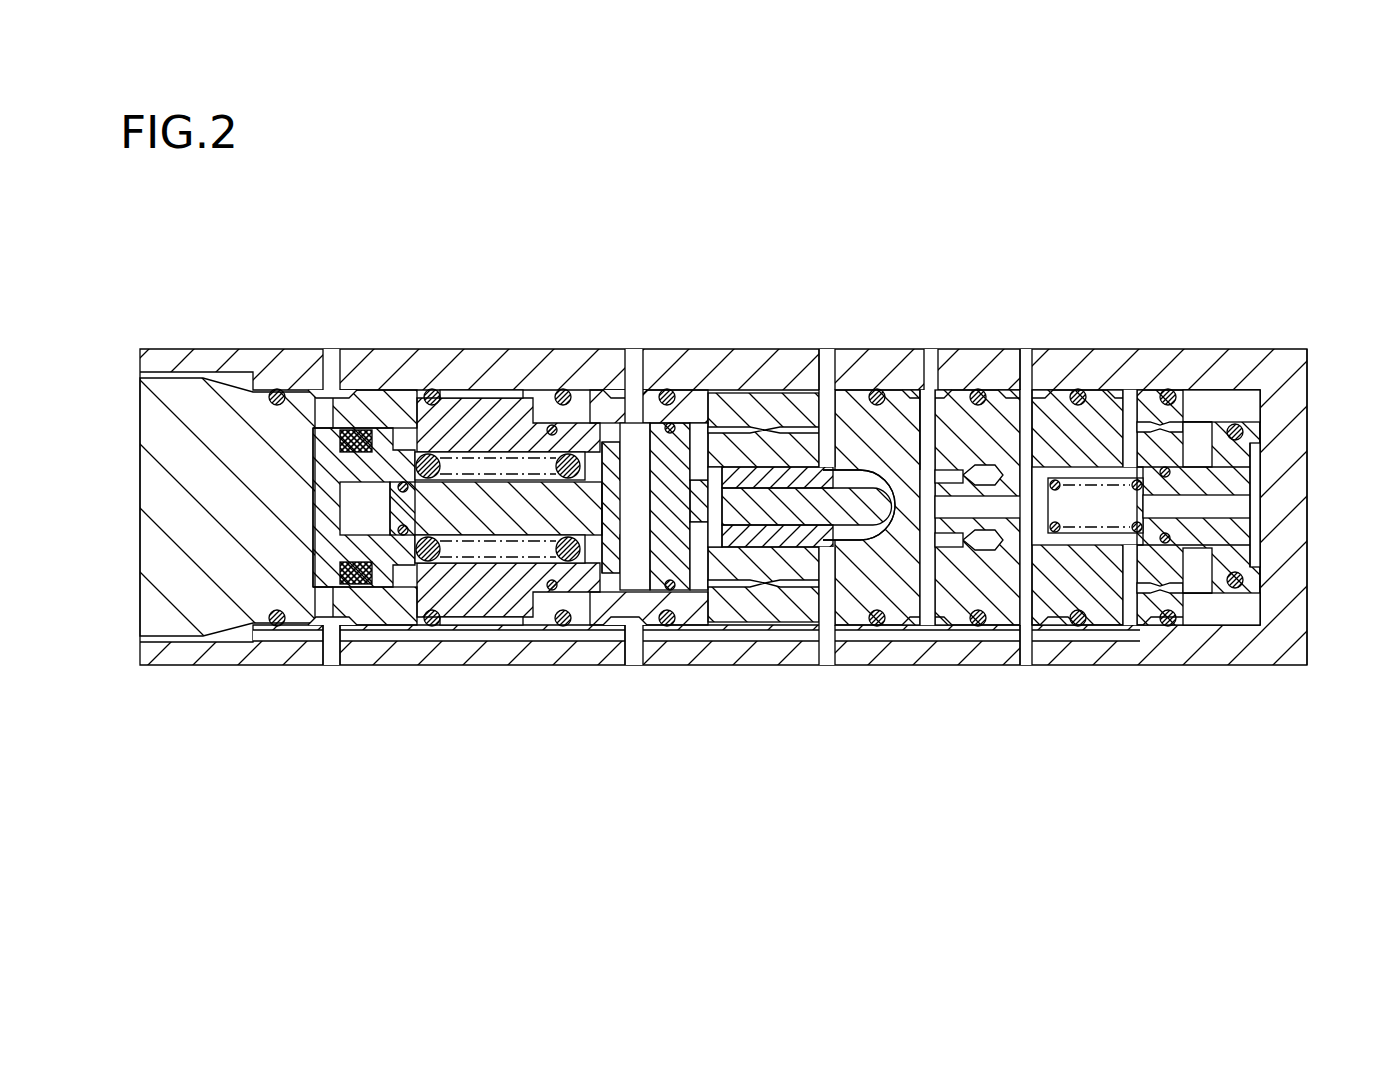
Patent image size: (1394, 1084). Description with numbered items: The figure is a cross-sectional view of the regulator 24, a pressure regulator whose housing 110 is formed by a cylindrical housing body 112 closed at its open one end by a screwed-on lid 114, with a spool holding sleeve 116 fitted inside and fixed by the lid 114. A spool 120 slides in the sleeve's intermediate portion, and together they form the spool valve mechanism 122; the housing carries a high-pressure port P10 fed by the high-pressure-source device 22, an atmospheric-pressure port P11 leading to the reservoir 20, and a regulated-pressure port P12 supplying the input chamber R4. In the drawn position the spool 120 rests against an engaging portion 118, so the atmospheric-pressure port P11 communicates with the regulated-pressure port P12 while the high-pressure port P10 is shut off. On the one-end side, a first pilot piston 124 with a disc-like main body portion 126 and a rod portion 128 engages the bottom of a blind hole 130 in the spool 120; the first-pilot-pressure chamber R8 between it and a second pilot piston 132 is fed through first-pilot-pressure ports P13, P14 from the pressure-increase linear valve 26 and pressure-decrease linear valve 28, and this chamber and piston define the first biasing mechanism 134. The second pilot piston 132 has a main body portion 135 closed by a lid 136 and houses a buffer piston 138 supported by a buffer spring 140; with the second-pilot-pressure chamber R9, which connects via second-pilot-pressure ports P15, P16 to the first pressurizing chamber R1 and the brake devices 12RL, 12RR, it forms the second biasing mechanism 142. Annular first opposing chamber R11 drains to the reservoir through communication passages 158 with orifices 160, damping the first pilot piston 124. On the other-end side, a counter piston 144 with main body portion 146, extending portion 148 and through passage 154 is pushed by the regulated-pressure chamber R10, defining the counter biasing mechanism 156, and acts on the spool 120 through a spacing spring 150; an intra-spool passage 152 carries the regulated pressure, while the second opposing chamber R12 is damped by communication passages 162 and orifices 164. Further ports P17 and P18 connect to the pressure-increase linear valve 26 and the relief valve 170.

The housing 110 is at (470, 726).
The lid 114 is at (150, 410).
The second pilot piston 132 is at (395, 590).
The second biasing mechanism 142 is at (366, 394).
The buffer piston 138 is at (502, 520).
The first biasing mechanism 134 is at (693, 462).
The lid 136 is at (540, 427).
The main body portion 135 is at (421, 436).
The buffer spring 140 is at (416, 588).
The first-pilot-pressure chamber R8 is at (580, 420).
The main body portion 126 is at (654, 592).
The rod portion 128 is at (737, 515).
The first pilot piston 124 is at (735, 440).
The first opposing chamber R11 is at (700, 440).
The communication passages 158 is at (800, 440).
The spool 120 is at (881, 546).
The blind hole 130 is at (862, 470).
The orifice 160 is at (766, 466).
The engaging portion 118 is at (748, 495).
The spool valve mechanism 122 is at (945, 555).
The relief valve 170 is at (823, 665).
The spacing spring 150 is at (1068, 540).
The intra-spool passage 152 is at (1013, 510).
The main body portion 146 is at (1247, 430).
The orifice 164 is at (1152, 420).
The communication passages 162 is at (1190, 420).
The extending portion 148 is at (1205, 460).
The through passage 154 is at (1240, 575).
The counter piston 144 is at (1203, 552).
The second opposing chamber R12 is at (1240, 432).
The regulated-pressure chamber R10 is at (1262, 542).
The counter biasing mechanism 156 is at (1255, 389).
The housing body 112 is at (1070, 349).
The spool holding sleeve 116 is at (1108, 349).
The first pressurizing chamber R1 is at (333, 349).
The pressure-decrease linear valve 28 is at (633, 349).
The reservoir 20 is at (822, 349).
The input chamber R4 is at (931, 349).
The high-pressure-source device 22 is at (1028, 349).
The regulator 24 is at (1194, 154).
The brake device 12RR is at (333, 665).
The brake device 12RL is at (394, 733).
The pressure-increase linear valve 26 is at (637, 665).
The second-pilot-pressure chamber R9 is at (318, 572).
The high-pressure port P10 is at (1028, 349).
The atmospheric-pressure port P11 is at (828, 349).
The regulated-pressure port P12 is at (930, 349).
The first-pilot-pressure port P13 is at (628, 665).
The first-pilot-pressure port P14 is at (628, 349).
The second-pilot-pressure port P15 is at (323, 349).
The second-pilot-pressure port P16 is at (323, 665).
The high-pressure port P17 is at (1028, 665).
The atmospheric-pressure port P18 is at (828, 665).